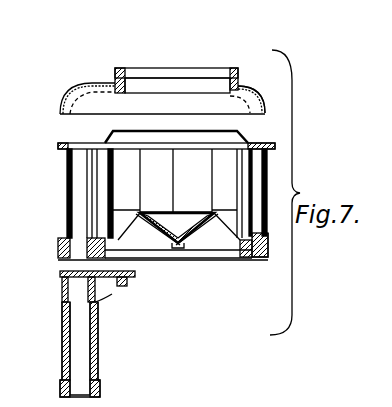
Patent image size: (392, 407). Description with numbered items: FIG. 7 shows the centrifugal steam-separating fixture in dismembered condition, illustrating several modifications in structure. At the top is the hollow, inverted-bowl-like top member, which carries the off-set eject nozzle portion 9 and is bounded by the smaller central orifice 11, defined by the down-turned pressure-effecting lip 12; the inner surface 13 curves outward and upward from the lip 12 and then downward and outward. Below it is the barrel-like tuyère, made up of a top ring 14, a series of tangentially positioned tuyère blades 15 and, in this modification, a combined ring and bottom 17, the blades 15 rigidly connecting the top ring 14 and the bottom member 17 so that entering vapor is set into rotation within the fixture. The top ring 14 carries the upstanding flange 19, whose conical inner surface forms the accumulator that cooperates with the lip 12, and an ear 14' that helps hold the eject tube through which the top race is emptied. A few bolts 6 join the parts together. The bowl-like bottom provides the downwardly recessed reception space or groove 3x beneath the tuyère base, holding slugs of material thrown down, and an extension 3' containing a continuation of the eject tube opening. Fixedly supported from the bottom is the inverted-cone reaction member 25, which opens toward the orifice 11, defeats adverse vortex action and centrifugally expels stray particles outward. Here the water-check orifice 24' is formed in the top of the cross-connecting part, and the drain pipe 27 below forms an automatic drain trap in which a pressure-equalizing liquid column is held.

The off-set eject nozzle portion 9 is at (84, 96).
The central orifice 11 is at (182, 87).
The pressure-effecting lip 12 is at (230, 92).
The inner surface 13 is at (250, 102).
The upstanding flange 19 is at (112, 133).
The top ring 14 is at (188, 139).
The ear 14' is at (148, 193).
The tuyère blades 15 is at (212, 178).
The reaction member 25 is at (168, 205).
The reception space 3x is at (82, 243).
The extension 3' is at (229, 264).
The bolts 6 is at (264, 247).
The combined ring and bottom 17 is at (256, 258).
The water-check orifice 24' is at (81, 286).
The drain pipe 27 is at (94, 346).